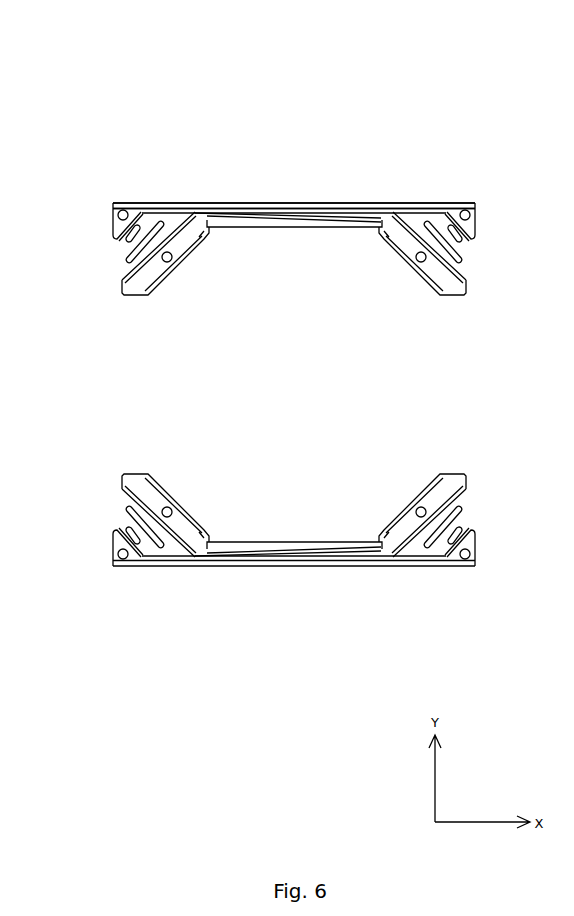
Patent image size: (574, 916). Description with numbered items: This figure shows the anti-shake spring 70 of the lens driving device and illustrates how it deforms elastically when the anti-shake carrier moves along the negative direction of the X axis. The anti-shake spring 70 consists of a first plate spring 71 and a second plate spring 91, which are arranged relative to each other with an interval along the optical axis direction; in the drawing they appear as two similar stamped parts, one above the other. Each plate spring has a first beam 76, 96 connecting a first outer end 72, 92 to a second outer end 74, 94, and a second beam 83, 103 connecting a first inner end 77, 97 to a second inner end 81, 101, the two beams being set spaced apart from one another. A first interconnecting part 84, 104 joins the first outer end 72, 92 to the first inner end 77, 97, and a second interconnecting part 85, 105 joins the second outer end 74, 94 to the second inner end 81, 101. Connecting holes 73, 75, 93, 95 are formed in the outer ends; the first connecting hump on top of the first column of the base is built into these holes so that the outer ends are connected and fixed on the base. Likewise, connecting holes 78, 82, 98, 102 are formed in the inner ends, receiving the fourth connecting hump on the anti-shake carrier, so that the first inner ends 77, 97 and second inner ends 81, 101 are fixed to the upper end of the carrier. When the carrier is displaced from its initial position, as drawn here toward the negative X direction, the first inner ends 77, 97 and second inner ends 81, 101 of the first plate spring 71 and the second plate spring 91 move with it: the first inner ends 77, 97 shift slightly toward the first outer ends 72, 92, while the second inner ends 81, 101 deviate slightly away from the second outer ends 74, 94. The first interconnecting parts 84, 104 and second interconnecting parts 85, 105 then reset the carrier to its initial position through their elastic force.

The anti-shake spring 70 is at (91, 147).
The first plate spring 71 is at (462, 105).
The first outer end 72 is at (138, 212).
The connecting hole 73 is at (116, 206).
The second outer end 74 is at (442, 206).
The connecting hole 75 is at (459, 206).
The first beam 76 is at (289, 212).
The first inner end 77 is at (225, 220).
The connecting hole 78 is at (173, 252).
The second inner end 81 is at (370, 220).
The connecting hole 82 is at (417, 252).
The second beam 83 is at (253, 222).
The first interconnecting part 84 is at (158, 218).
The second interconnecting part 85 is at (423, 220).
The second plate spring 91 is at (462, 658).
The first outer end 92 is at (138, 558).
The connecting hole 93 is at (116, 564).
The second outer end 94 is at (442, 564).
The connecting hole 95 is at (459, 564).
The first beam 96 is at (289, 558).
The first inner end 97 is at (225, 550).
The connecting hole 98 is at (173, 518).
The second inner end 101 is at (370, 550).
The connecting hole 102 is at (417, 518).
The second beam 103 is at (253, 548).
The first interconnecting part 104 is at (158, 552).
The second interconnecting part 105 is at (423, 550).